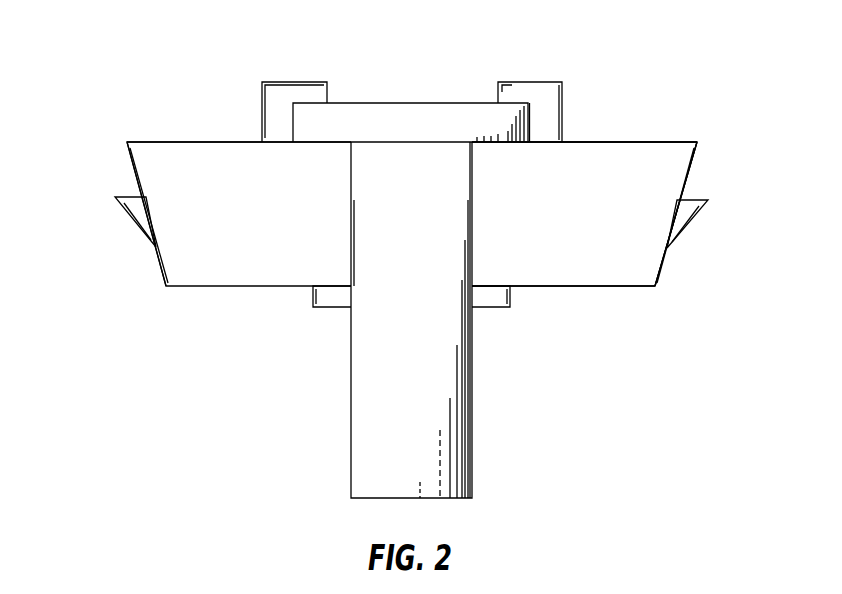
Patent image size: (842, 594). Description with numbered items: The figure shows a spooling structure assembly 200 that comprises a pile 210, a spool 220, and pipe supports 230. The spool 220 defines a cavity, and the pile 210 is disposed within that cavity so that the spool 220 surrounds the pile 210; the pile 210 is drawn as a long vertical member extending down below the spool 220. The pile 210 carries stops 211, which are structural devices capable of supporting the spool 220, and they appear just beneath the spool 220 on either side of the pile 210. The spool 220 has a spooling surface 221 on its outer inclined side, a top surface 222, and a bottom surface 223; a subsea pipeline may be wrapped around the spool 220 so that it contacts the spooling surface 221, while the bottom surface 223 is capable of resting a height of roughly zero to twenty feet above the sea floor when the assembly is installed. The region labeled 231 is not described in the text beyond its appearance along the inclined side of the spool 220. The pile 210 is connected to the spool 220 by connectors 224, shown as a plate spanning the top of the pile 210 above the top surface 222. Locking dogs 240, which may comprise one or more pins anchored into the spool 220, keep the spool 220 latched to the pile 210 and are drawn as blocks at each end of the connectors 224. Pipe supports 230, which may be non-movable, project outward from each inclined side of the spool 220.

The spooling structure assembly 200 is at (146, 60).
The pile 210 is at (473, 413).
The stops 211 is at (487, 310).
The spool 220 is at (656, 288).
The spooling surface 221 is at (692, 168).
The top surface 222 is at (603, 141).
The bottom surface 223 is at (560, 287).
The connectors 224 is at (412, 103).
The pipe supports 230 is at (132, 218).
The inclined side surface 231 is at (117, 183).
The locking dogs 240 is at (530, 80).